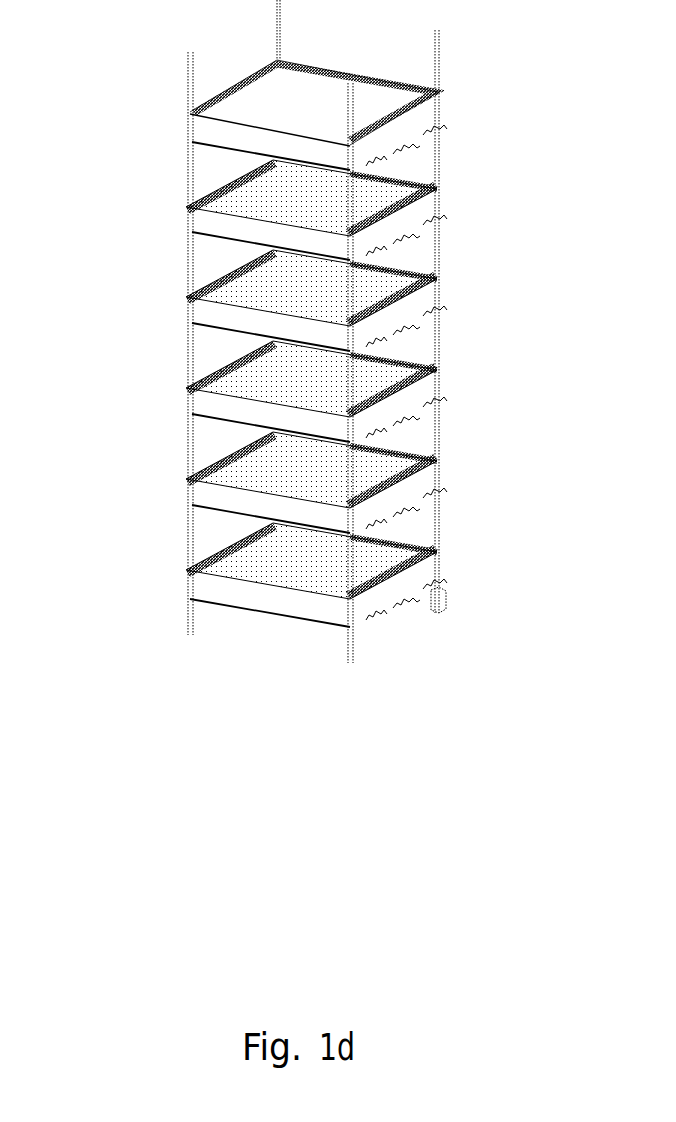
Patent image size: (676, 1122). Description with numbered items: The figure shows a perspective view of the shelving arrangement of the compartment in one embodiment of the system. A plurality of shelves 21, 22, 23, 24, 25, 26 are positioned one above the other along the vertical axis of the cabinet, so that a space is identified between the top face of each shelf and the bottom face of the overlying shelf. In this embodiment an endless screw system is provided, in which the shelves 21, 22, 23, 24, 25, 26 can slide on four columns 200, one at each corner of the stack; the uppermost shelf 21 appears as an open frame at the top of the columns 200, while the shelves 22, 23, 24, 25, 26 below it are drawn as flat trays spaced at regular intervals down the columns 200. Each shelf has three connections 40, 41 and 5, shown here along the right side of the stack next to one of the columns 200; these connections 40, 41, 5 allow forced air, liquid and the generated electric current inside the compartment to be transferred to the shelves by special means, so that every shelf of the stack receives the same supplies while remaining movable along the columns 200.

The connection 5 is at (409, 151).
The shelf 21 is at (190, 133).
The shelf 22 is at (190, 220).
The shelf 23 is at (190, 310).
The shelf 24 is at (190, 410).
The shelf 25 is at (190, 498).
The shelf 26 is at (190, 583).
The connection 40 is at (451, 133).
The connection 41 is at (382, 165).
The column 200 is at (435, 340).